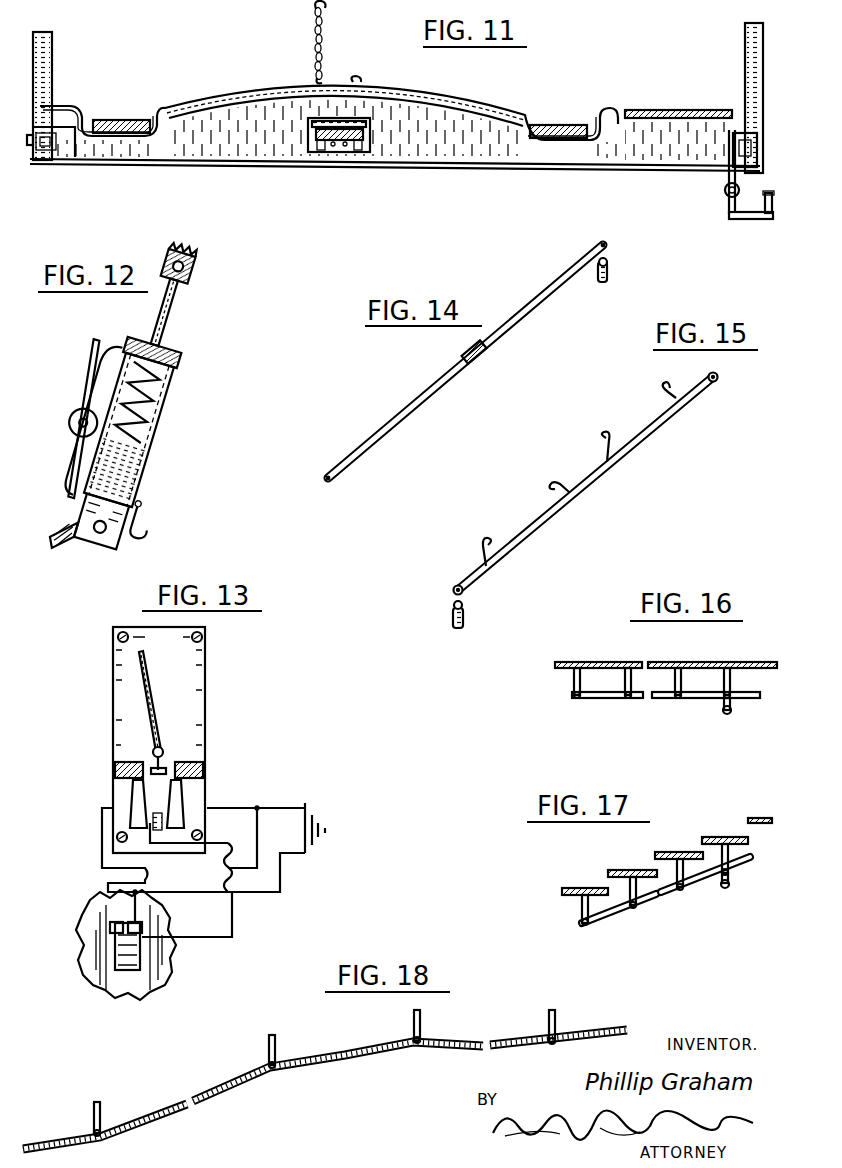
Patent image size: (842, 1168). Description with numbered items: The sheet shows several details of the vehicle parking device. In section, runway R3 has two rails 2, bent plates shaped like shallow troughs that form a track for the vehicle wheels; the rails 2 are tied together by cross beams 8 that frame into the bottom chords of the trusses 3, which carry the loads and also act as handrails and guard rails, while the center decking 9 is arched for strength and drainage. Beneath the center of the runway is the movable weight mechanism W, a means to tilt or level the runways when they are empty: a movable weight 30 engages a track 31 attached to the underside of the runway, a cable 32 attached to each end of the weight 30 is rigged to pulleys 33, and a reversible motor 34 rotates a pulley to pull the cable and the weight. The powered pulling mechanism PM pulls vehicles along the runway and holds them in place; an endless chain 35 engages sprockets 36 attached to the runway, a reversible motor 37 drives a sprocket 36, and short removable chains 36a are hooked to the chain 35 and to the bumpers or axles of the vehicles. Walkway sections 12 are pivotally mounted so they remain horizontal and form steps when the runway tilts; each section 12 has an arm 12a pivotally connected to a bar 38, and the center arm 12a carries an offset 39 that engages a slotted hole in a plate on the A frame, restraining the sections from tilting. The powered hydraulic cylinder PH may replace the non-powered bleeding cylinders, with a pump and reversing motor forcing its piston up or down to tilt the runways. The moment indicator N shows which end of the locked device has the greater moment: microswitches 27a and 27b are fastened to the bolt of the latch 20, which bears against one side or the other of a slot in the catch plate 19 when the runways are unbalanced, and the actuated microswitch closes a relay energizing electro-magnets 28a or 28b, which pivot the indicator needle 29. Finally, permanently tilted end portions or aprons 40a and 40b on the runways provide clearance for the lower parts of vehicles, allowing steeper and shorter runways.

In FIG. 11, the rails 2 is at (120, 120).
In FIG. 11, the trusses 3 is at (52, 56).
In FIG. 11, the cross beams 8 is at (213, 168).
In FIG. 11, the center decking 9 is at (250, 90).
In FIG. 11, the walkway sections 12 is at (686, 108).
In FIG. 16, the walkway sections 12 is at (575, 664).
In FIG. 17, the walkway sections 12 is at (583, 887).
In FIG. 11, the arm 12a is at (728, 156).
In FIG. 16, the arm 12a is at (572, 690).
In FIG. 17, the arm 12a is at (580, 911).
In FIG. 11, the movable weight 30 is at (371, 134).
In FIG. 14, the movable weight 30 is at (463, 351).
In FIG. 11, the track 31 is at (308, 124).
In FIG. 11, the cable 32 is at (333, 147).
In FIG. 14, the cable 32 is at (369, 441).
In FIG. 11, the sprockets 36 is at (315, 77).
In FIG. 15, the sprockets 36 is at (720, 382).
In FIG. 11, the short removable chains 36a is at (313, 27).
In FIG. 15, the short removable chains 36a is at (664, 390).
In FIG. 11, the bar 38 is at (726, 197).
In FIG. 16, the bar 38 is at (603, 699).
In FIG. 17, the bar 38 is at (613, 918).
In FIG. 11, the offset 39 is at (757, 220).
In FIG. 16, the offset 39 is at (732, 710).
In FIG. 17, the offset 39 is at (730, 886).
In FIG. 14, the pulleys 33 is at (597, 246).
In FIG. 14, the reversible motor 34 is at (609, 271).
In FIG. 15, the endless chain 35 is at (543, 534).
In FIG. 15, the reversible motor 37 is at (450, 619).
In FIG. 13, the indicator needle 29 is at (152, 693).
In FIG. 13, the electro-magnet 28a is at (127, 767).
In FIG. 13, the electro-magnet 28b is at (192, 767).
In FIG. 13, the microswitch 27a is at (115, 927).
In FIG. 13, the microswitch 27b is at (143, 927).
In FIG. 13, the catch plate 19 is at (90, 961).
In FIG. 13, the latch 20 is at (139, 959).
In FIG. 18, the tilted end portion 40a is at (43, 1137).
In FIG. 18, the tilted end portion 40b is at (305, 1060).
In FIG. 11, the runway R3 is at (146, 76).
In FIG. 11, the movable weight mechanism W is at (389, 178).
In FIG. 14, the movable weight mechanism W is at (423, 377).
In FIG. 11, the powered pulling mechanism PM is at (418, 73).
In FIG. 15, the powered pulling mechanism PM is at (648, 453).
In FIG. 12, the power operated hydraulic cylinder PH is at (170, 445).
In FIG. 13, the moment indicator N is at (250, 779).